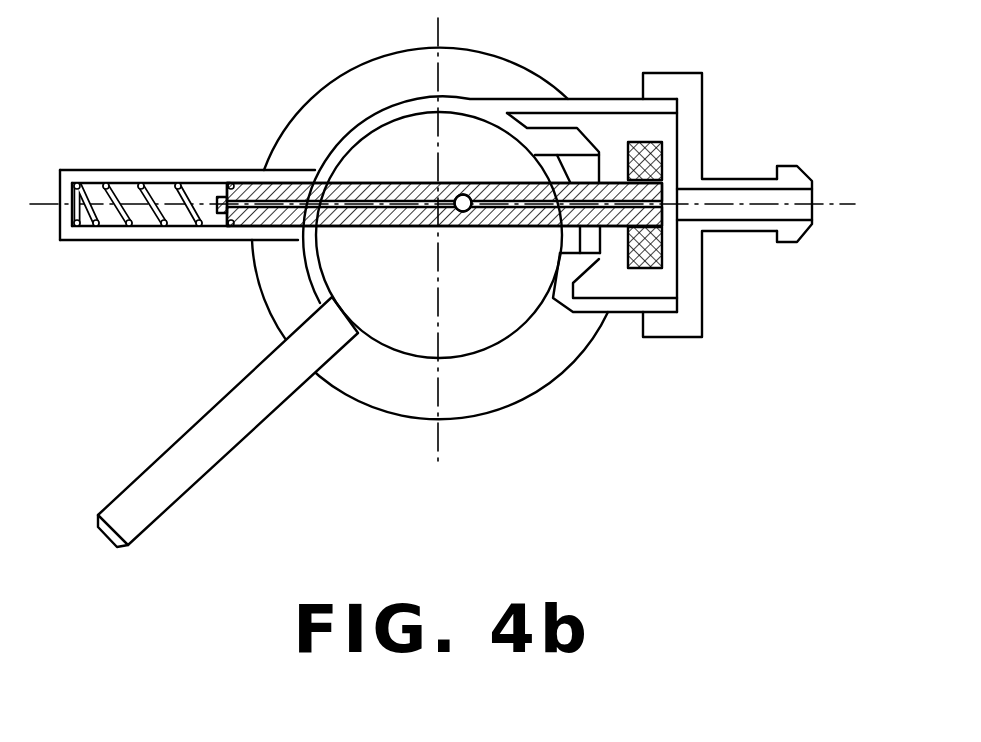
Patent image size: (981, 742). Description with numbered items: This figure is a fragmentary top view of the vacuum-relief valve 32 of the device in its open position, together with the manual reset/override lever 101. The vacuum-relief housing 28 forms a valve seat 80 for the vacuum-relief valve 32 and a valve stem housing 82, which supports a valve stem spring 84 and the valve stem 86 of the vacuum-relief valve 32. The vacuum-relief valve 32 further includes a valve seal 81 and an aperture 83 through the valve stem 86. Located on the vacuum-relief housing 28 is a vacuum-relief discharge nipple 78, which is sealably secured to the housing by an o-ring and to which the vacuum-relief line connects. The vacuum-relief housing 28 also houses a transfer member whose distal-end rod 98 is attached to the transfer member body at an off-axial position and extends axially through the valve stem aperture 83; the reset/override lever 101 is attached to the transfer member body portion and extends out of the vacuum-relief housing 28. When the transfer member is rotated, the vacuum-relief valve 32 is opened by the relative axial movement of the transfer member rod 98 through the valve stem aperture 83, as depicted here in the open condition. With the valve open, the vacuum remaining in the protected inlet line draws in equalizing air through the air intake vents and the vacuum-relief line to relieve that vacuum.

The vacuum-relief housing 28 is at (560, 380).
The vacuum-relief valve 32 is at (658, 180).
The vacuum-relief discharge nipple 78 is at (690, 260).
The valve seat 80 is at (598, 260).
The valve seal 81 is at (628, 147).
The valve stem housing 82 is at (142, 240).
The valve stem aperture 83 is at (460, 194).
The valve stem spring 84 is at (146, 190).
The valve stem 86 is at (345, 228).
The transfer member rod 98 is at (466, 212).
The reset/override lever 101 is at (218, 435).